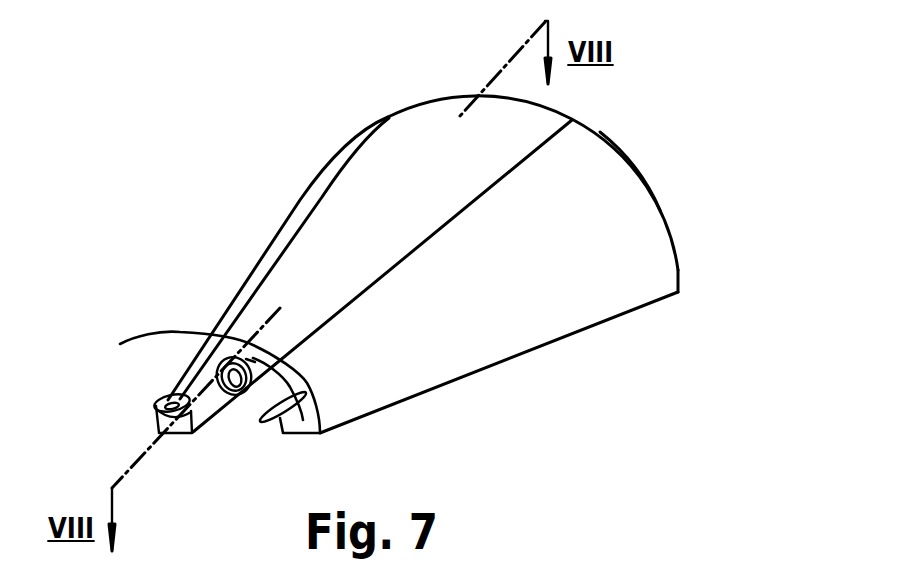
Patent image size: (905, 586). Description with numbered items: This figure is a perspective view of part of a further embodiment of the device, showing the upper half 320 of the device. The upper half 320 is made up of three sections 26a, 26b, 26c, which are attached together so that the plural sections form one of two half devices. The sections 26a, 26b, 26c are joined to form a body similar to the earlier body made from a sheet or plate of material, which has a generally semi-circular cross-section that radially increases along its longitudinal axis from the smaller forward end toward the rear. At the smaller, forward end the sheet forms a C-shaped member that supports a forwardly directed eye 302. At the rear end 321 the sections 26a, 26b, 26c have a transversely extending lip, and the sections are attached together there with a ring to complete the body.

The section 26a is at (270, 250).
The section 26b is at (417, 132).
The section 26c is at (613, 232).
The eye 302 is at (216, 364).
The upper half of a device 320 is at (521, 371).
The rear end 321 is at (678, 272).